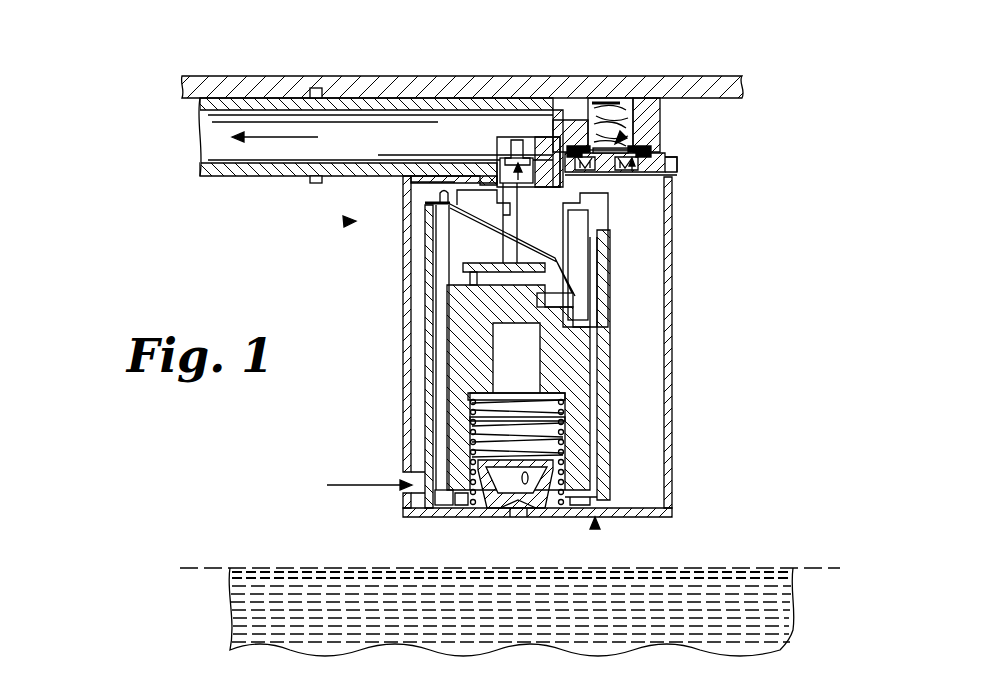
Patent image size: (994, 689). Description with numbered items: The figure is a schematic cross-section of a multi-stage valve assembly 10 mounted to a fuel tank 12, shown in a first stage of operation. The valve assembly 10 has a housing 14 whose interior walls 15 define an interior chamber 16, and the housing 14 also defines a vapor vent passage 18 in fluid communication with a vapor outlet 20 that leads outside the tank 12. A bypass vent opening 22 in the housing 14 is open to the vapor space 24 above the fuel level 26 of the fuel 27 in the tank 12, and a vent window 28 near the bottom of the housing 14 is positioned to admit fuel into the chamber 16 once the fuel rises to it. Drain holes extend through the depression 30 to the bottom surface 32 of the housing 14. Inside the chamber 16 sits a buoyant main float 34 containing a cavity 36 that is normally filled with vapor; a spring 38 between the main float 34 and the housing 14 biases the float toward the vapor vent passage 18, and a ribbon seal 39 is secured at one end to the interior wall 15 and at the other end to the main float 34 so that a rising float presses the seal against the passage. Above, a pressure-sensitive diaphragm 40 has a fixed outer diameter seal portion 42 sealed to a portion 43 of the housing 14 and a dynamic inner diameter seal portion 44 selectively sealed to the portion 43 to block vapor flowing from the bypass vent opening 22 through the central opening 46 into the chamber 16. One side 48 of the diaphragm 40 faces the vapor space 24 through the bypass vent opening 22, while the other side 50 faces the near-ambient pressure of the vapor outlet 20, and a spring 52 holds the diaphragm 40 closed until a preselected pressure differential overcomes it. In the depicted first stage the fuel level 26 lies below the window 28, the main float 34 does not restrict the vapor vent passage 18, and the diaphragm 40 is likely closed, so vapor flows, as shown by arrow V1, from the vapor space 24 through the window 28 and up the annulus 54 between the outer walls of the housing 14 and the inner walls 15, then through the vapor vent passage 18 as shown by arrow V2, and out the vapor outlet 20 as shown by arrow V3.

The multi-stage valve assembly 10 is at (346, 222).
The fuel tank 12 is at (323, 75).
The housing 14 is at (405, 362).
The interior walls 15 is at (428, 440).
The interior chamber 16 is at (598, 257).
The vapor vent passage 18 is at (545, 232).
The vapor outlet 20 is at (412, 117).
The bypass vent opening 22 is at (668, 163).
The vapor space 24 is at (756, 349).
The fuel level 26 is at (743, 567).
The fuel 27 is at (540, 610).
The vent window 28 is at (405, 493).
The depression 30 is at (517, 510).
The bottom surface 32 is at (597, 525).
The main float 34 is at (570, 357).
The cavity 36 is at (553, 430).
The spring 38 is at (567, 453).
The ribbon seal 39 is at (488, 215).
The pressure-sensitive diaphragm 40 is at (633, 147).
The fixed outer diameter seal portion 42 is at (573, 147).
The portion of the housing 43 is at (677, 173).
The dynamic inner diameter seal portion 44 is at (583, 147).
The central opening 46 is at (615, 160).
The one side of the diaphragm 48 is at (620, 160).
The other side of the diaphragm 50 is at (622, 136).
The spring 52 is at (603, 110).
The annulus 54 is at (424, 308).
The arrow V1 is at (365, 485).
The arrow V2 is at (543, 232).
The arrow V3 is at (283, 137).